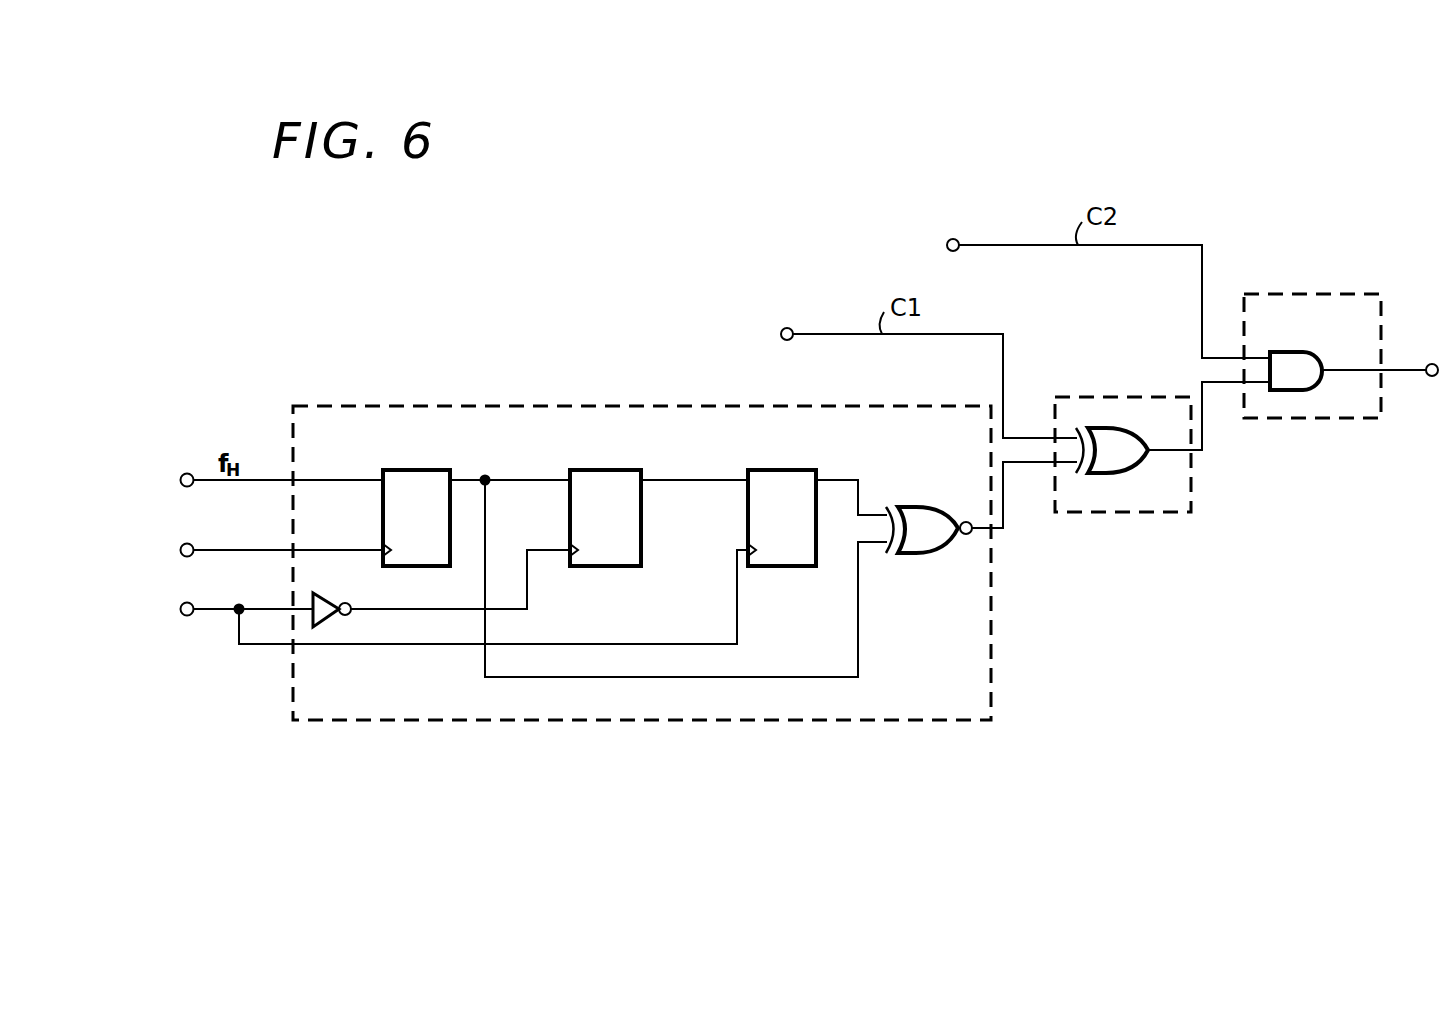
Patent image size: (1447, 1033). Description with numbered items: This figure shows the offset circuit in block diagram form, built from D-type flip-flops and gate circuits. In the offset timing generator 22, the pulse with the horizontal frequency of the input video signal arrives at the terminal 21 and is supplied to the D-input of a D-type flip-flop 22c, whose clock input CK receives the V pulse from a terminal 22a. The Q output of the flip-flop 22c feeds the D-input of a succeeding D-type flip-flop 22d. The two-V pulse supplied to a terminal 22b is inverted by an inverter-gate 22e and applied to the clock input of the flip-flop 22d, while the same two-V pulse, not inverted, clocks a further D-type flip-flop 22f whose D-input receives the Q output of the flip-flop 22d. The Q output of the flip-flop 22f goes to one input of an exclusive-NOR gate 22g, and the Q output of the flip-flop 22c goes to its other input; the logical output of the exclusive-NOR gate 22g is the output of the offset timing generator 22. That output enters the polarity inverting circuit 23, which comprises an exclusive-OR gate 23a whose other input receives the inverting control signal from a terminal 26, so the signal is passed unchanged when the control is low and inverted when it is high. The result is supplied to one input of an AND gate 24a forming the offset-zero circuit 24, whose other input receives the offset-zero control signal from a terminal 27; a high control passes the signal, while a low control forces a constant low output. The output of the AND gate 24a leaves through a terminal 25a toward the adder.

The terminal 21 is at (182, 474).
The offset timing generator 22 is at (815, 722).
The terminal 22a is at (182, 546).
The terminal 22b is at (181, 610).
The D-type flip-flop 22c is at (410, 469).
The D-type flip-flop 22d is at (610, 469).
The inverter-gate 22e is at (337, 597).
The D-type flip-flop 22f is at (797, 469).
The exclusive-NOR gate 22g is at (917, 554).
The polarity inverting circuit 23 is at (1110, 513).
The exclusive-OR gate 23a is at (1096, 426).
The offset-zero circuit 24 is at (1276, 420).
The AND gate 24a is at (1306, 392).
The terminal 25a is at (1432, 363).
The terminal 26 is at (787, 327).
The terminal 27 is at (953, 238).